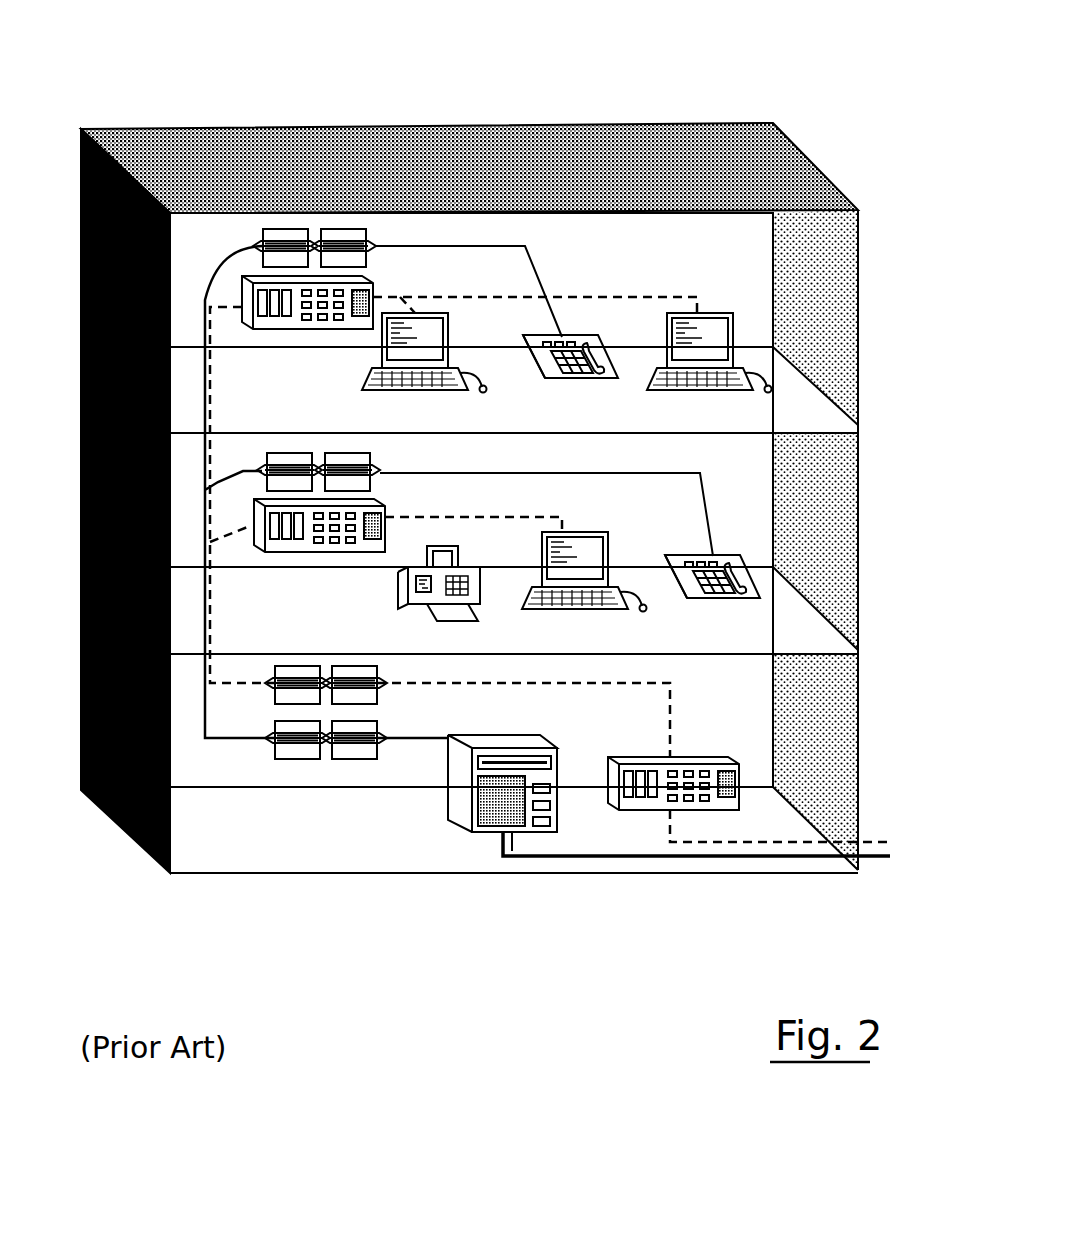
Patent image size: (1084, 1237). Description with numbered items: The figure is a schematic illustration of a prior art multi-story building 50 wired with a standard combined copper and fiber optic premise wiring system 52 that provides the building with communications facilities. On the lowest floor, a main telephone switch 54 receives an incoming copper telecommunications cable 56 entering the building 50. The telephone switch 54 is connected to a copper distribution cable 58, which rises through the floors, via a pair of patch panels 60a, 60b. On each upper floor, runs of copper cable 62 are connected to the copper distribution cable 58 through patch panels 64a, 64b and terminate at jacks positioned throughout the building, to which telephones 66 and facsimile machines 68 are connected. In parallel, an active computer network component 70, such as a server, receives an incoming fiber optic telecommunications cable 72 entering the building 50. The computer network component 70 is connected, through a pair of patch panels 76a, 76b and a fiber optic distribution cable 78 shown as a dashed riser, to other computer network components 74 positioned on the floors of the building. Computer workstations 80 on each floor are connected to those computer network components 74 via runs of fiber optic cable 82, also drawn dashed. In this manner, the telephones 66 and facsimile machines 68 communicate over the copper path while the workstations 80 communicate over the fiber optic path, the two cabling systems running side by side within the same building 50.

The multi-story building 50 is at (756, 113).
The combined copper and fiber optic premise wiring system 52 is at (811, 349).
The main telephone switch 54 is at (476, 831).
The incoming copper telecommunications cable 56 is at (624, 860).
The copper distribution cable 58 is at (212, 742).
The patch panel 60a is at (290, 760).
The patch panel 60b is at (347, 760).
The runs of copper cable 62 is at (538, 282).
The patch panel 64a is at (284, 233).
The patch panel 64b is at (345, 233).
The telephone 66 is at (606, 380).
The facsimile machine 68 is at (414, 604).
The active computer network component 70 is at (690, 762).
The incoming fiber optic telecommunications cable 72 is at (740, 848).
The computer network component 74 is at (262, 328).
The patch panel 76a is at (284, 668).
The patch panel 76b is at (368, 698).
The fiber optic distribution cable 78 is at (212, 598).
The computer workstation 80 is at (428, 382).
The runs of fiber optic cable 82 is at (640, 300).